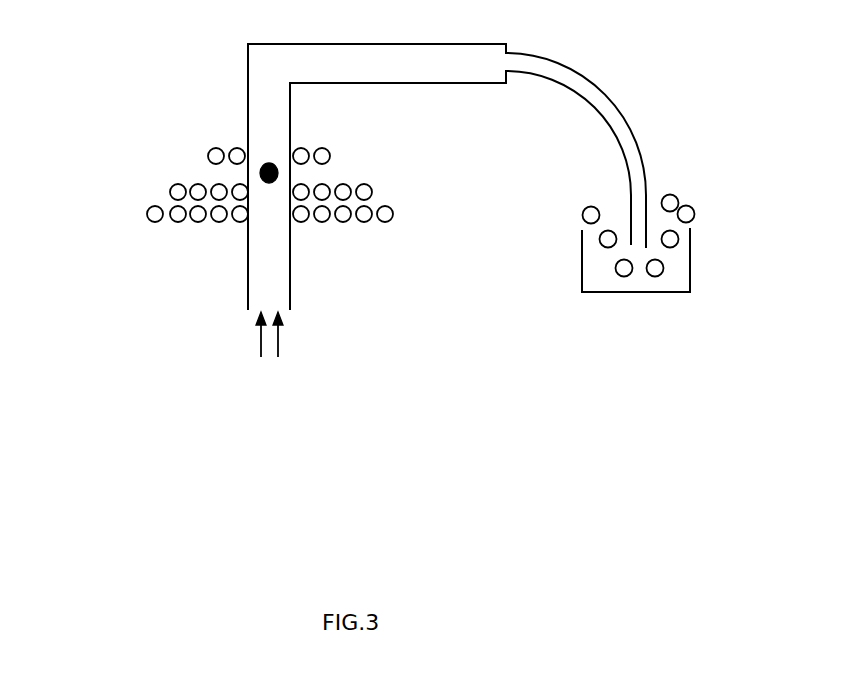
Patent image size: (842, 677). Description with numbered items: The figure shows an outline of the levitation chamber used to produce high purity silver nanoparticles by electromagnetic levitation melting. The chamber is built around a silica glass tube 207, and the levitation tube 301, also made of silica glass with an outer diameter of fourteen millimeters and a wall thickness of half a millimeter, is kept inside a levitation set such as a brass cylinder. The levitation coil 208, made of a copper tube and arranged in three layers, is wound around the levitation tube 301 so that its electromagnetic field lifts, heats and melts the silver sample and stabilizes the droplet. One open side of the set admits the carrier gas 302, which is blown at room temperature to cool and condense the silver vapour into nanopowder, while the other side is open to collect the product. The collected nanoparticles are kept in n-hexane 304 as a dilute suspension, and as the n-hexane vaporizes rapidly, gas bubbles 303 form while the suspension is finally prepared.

The silica glass tube 207 is at (205, 289).
The levitation coil 208 is at (122, 197).
The levitation tube 301 is at (261, 161).
The carrier gas 302 is at (269, 351).
The gas bubbles 303 is at (692, 207).
The n-hexane 304 is at (690, 277).